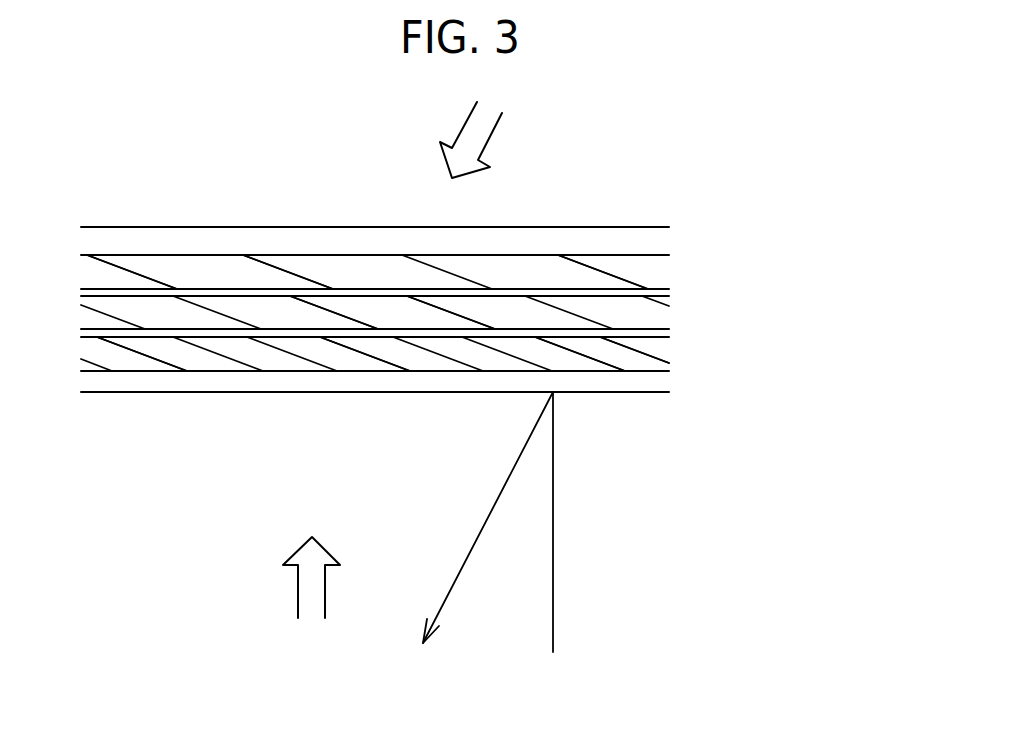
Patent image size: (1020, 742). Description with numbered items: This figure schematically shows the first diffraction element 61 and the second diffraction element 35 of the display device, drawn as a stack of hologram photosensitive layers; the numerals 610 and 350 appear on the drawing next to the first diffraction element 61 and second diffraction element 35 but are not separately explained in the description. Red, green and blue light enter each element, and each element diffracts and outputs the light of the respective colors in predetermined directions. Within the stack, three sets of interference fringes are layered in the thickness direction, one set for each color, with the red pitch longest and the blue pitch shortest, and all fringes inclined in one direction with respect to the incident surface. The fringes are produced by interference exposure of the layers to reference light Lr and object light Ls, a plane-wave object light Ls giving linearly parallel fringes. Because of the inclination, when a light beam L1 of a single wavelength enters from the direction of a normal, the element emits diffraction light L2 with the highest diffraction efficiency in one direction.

The first diffraction element 61 is at (434, 275).
The color filter layer 610 is at (434, 289).
The second diffraction element 35 is at (434, 289).
The color filter layer 350 is at (643, 213).
The reference light Lr is at (487, 139).
The object light Ls is at (311, 595).
The light beam L1 is at (553, 592).
The diffraction light L2 is at (472, 547).